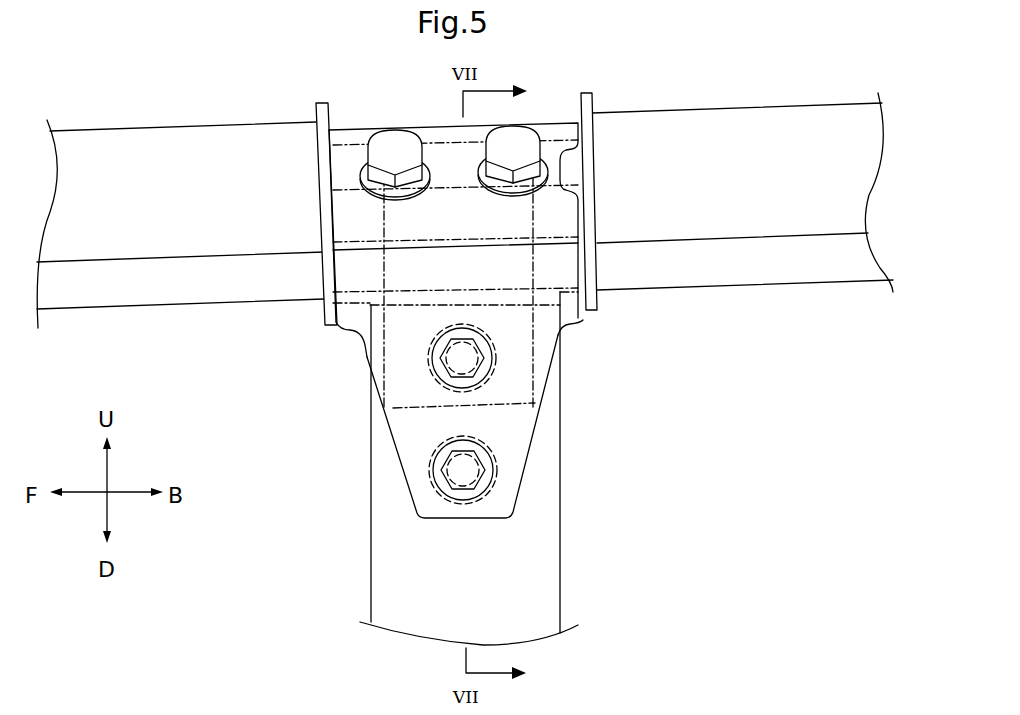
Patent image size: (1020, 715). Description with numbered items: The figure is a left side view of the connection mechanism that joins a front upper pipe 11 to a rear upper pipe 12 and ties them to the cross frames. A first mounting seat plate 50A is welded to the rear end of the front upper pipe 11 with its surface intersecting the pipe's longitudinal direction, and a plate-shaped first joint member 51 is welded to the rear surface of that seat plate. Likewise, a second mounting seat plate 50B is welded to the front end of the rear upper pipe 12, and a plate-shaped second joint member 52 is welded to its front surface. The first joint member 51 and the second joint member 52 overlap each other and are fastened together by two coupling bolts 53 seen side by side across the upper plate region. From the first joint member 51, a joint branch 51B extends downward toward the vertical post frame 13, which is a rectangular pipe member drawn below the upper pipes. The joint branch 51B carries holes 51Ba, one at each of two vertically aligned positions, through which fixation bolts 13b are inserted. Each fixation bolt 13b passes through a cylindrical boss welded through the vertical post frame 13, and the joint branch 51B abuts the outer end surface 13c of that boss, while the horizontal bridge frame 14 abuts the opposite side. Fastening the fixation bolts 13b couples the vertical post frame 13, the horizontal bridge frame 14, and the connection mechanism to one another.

The front upper pipe 11 is at (125, 140).
The rear upper pipe 12 is at (750, 115).
The vertical post frame 13 is at (570, 550).
The fixation bolt 13b is at (493, 345).
The outer end surface 13c is at (500, 463).
The horizontal bridge frame 14 is at (383, 347).
The first mounting seat plate 50A is at (316, 183).
The second mounting seat plate 50B is at (594, 183).
The first joint member 51 is at (372, 120).
The joint branch 51B is at (405, 440).
The hole 51Ba is at (443, 377).
The second joint member 52 is at (570, 300).
The coupling bolt 53 is at (493, 150).